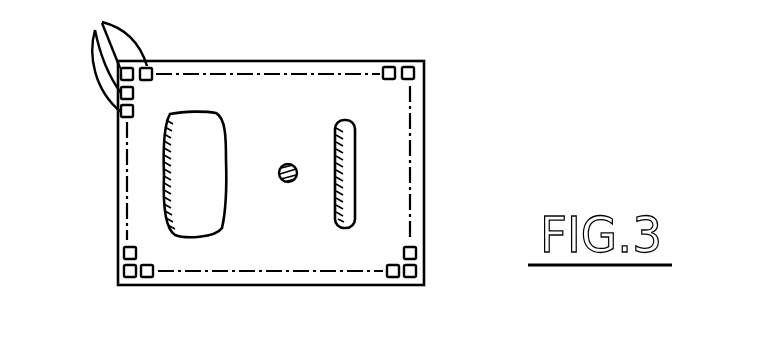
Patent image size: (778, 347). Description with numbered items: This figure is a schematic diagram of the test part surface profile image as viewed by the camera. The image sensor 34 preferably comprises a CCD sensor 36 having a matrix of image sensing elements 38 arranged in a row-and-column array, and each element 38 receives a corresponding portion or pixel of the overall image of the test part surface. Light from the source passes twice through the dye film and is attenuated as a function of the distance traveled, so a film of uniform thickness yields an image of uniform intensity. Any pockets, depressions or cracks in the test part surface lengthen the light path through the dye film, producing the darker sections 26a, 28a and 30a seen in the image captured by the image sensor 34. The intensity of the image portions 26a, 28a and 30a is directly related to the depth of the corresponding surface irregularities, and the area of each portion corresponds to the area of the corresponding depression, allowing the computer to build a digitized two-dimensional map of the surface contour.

The image sensor 34 is at (359, 59).
The CCD sensor 36 is at (420, 74).
The image sensing elements 38 is at (99, 59).
The darker section corresponding to pocket 26a is at (193, 112).
The darker section corresponding to depression 28a is at (285, 163).
The darker section corresponding to crack 30a is at (354, 173).